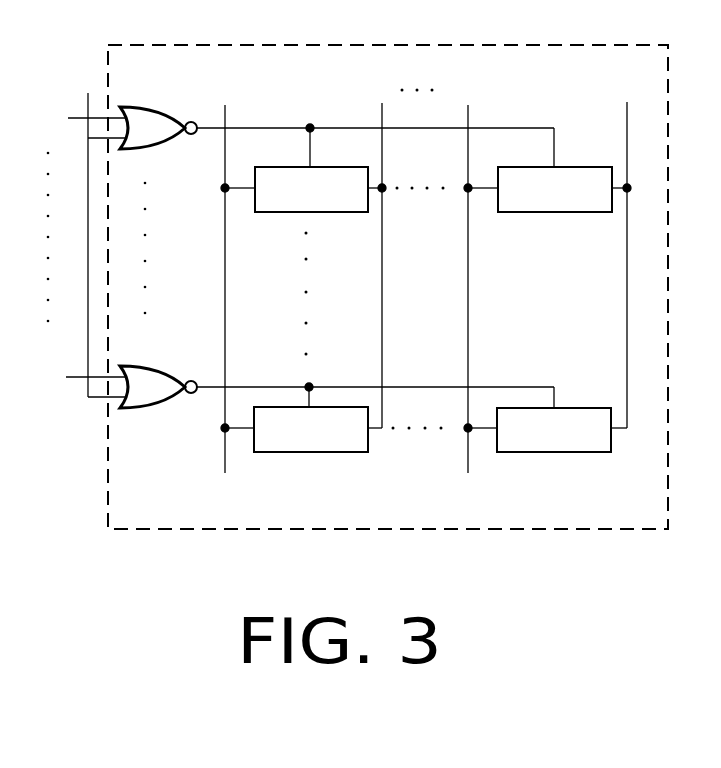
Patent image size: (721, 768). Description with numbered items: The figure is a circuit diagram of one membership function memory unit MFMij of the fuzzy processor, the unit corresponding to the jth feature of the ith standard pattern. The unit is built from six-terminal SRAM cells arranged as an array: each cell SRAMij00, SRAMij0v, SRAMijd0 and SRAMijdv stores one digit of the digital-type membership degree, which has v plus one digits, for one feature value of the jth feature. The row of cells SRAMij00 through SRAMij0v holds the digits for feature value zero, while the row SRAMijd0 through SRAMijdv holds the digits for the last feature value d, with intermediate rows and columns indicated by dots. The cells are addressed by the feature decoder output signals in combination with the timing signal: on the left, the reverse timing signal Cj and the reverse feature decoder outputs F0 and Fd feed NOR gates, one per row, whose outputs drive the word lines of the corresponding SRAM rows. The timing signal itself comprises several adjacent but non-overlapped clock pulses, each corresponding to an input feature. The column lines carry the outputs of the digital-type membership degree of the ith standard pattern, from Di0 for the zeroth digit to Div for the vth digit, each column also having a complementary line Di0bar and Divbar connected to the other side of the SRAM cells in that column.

The membership function memory unit MFMij is at (388, 266).
The reverse timing signal Cj is at (95, 55).
The reverse feature decoder output signal F0 is at (60, 100).
The reverse feature decoder output signal Fd is at (60, 357).
The membership degree output Di0 is at (228, 292).
The complementary membership degree output Di0bar is at (392, 70).
The membership degree output Div is at (465, 292).
The complementary membership degree output Divbar is at (642, 67).
The SRAM unit SRAMij00 is at (303, 189).
The SRAM unit SRAMij0v is at (547, 189).
The SRAM unit SRAMijd0 is at (303, 429).
The SRAM unit SRAMijdv is at (547, 430).